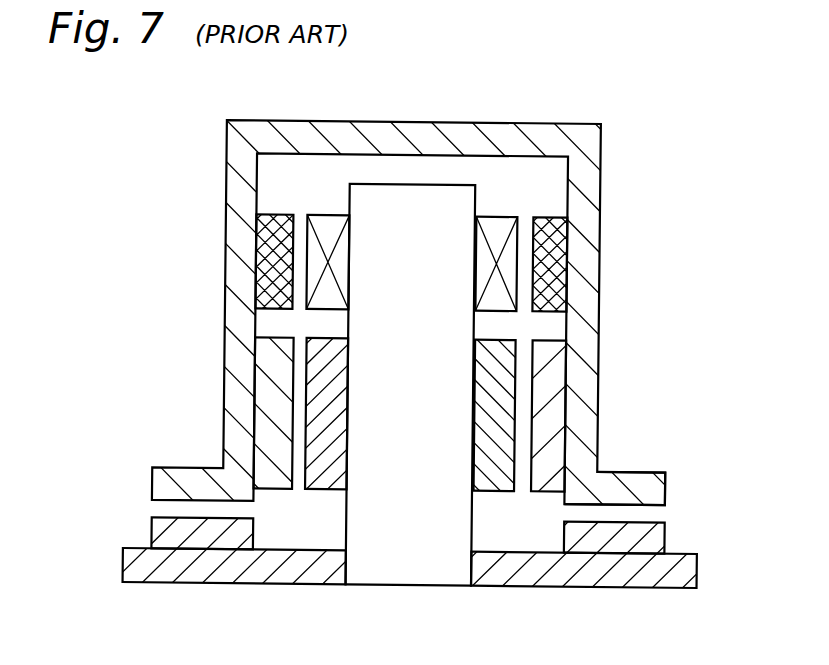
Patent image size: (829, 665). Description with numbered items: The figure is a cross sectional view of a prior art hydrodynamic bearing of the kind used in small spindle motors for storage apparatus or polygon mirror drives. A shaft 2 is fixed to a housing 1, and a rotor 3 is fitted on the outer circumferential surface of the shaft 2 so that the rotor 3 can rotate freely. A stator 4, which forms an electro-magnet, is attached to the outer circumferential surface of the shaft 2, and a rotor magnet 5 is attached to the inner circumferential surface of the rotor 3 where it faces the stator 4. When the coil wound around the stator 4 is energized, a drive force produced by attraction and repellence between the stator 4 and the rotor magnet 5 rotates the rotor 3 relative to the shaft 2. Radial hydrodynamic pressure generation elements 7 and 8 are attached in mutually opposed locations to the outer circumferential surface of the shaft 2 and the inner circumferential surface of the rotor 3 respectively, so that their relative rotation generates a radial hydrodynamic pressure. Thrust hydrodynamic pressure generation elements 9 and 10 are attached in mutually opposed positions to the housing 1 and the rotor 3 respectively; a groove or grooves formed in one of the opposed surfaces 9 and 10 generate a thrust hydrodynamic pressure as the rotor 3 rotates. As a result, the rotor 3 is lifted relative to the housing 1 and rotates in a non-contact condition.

The housing 1 is at (545, 567).
The shaft 2 is at (417, 557).
The rotor 3 is at (401, 126).
The stator 4 is at (496, 226).
The rotor magnet 5 is at (547, 282).
The radial hydrodynamic pressure generation element 7 is at (320, 363).
The radial hydrodynamic pressure generation element 8 is at (272, 409).
The thrust hydrodynamic pressure generation element 9 is at (647, 536).
The thrust hydrodynamic pressure generation element 10 is at (625, 495).